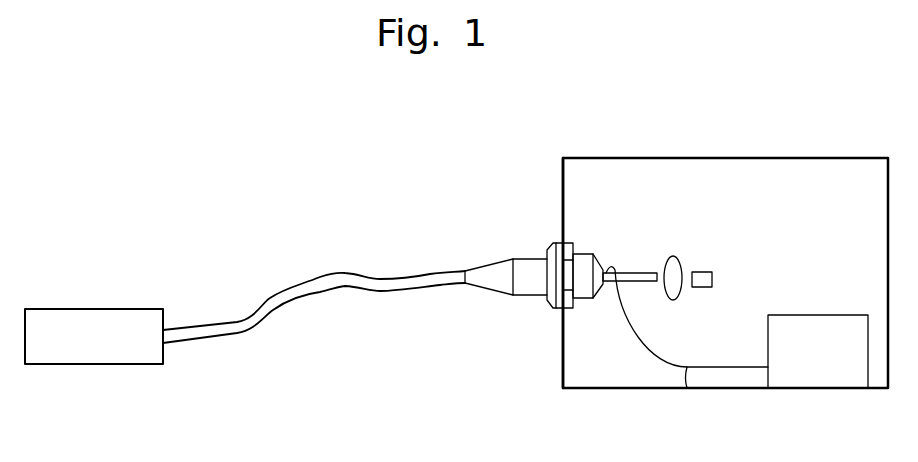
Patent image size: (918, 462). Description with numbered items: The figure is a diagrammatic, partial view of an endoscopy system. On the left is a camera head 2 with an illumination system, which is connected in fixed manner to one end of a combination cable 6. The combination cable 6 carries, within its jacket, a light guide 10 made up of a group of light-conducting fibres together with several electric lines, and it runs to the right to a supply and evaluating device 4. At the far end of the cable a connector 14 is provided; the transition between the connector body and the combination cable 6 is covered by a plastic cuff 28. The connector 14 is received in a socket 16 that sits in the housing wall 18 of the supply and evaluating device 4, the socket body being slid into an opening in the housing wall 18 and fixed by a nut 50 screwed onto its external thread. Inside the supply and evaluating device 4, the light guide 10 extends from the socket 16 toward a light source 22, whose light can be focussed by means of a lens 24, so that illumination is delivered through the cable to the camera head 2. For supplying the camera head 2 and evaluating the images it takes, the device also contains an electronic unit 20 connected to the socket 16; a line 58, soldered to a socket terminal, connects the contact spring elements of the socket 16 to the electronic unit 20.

The camera head 2 is at (116, 306).
The combination cable 6 is at (313, 283).
The plastic cuff 28 is at (480, 280).
The connector 14 is at (524, 300).
The socket 16 is at (542, 244).
The nut 50 is at (570, 308).
The light guide 10 is at (633, 272).
The lens 24 is at (675, 258).
The light source 22 is at (712, 272).
The supply and evaluating device 4 is at (720, 176).
The housing wall 18 is at (562, 186).
The electronic unit 20 is at (818, 370).
The line 58 is at (688, 384).